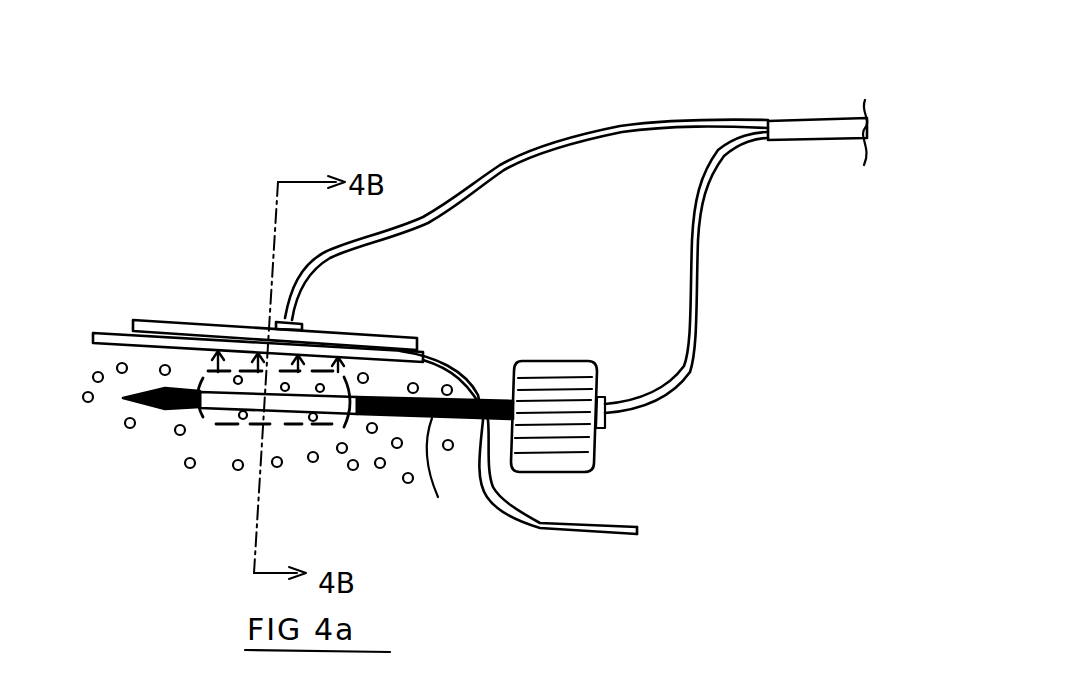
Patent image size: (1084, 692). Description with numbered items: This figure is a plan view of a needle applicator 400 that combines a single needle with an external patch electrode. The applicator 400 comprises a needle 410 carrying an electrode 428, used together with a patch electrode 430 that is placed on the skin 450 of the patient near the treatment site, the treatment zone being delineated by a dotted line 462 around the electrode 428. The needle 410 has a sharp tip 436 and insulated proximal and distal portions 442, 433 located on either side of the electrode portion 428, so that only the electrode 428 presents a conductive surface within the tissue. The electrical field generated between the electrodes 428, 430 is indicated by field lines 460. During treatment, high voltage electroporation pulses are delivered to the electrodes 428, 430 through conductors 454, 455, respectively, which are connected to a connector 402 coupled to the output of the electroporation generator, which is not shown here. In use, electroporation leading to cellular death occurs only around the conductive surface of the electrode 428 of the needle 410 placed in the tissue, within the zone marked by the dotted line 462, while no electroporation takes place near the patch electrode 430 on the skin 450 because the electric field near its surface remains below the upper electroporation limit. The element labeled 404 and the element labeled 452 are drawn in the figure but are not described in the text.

The needle applicator 400 is at (327, 140).
The connector 402 is at (807, 120).
The handle / control device 404 is at (598, 361).
The needle 410 is at (370, 393).
The electrode 428 is at (290, 420).
The patch electrode 430 is at (231, 327).
The insulated distal portion 433 is at (167, 403).
The sharp tip 436 is at (122, 397).
The insulated proximal portion 442 is at (466, 477).
The skin 450 is at (642, 535).
The tissue 452 is at (383, 495).
The conductor 454 is at (695, 353).
The conductor 455 is at (712, 66).
The electrical field lines 460 is at (207, 367).
The dotted line 462 is at (230, 424).